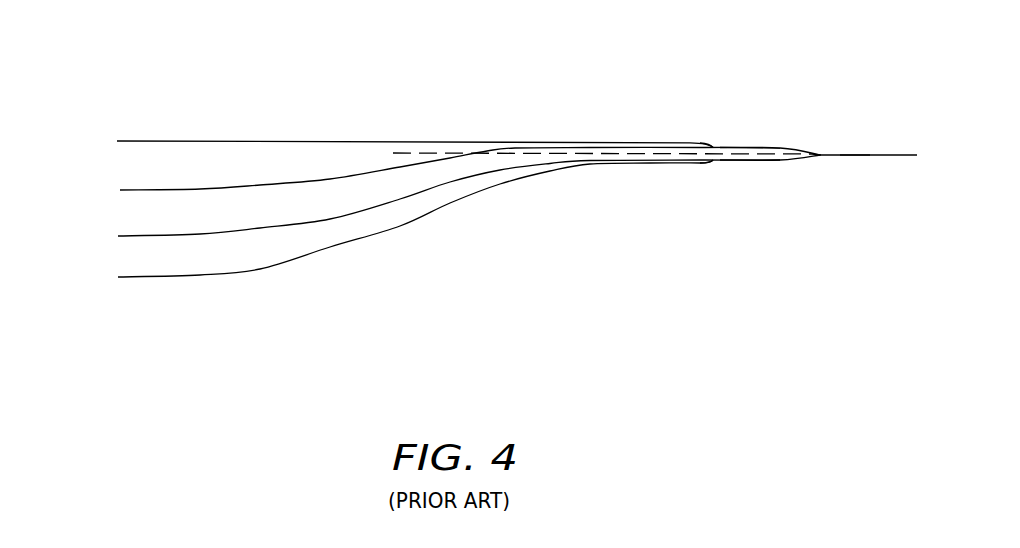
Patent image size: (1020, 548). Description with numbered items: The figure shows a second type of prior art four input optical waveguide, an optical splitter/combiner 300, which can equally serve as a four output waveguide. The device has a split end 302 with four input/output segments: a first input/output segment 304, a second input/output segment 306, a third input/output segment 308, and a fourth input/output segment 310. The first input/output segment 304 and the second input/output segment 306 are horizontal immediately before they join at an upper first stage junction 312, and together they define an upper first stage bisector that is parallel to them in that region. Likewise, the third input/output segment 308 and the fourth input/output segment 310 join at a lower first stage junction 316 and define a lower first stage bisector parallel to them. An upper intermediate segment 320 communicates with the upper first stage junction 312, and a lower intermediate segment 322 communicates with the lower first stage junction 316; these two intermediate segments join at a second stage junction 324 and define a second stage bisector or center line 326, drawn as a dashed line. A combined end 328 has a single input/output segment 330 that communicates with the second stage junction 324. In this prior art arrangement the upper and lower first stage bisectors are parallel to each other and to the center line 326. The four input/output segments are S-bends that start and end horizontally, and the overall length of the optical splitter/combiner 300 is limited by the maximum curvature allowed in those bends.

The optical splitter/combiner 300 is at (638, 80).
The split end 302 is at (423, 205).
The first input/output segment 304 is at (172, 141).
The second input/output segment 306 is at (157, 191).
The third input/output segment 308 is at (157, 237).
The fourth input/output segment 310 is at (180, 278).
The upper first stage junction 312 is at (712, 146).
The lower first stage junction 316 is at (713, 164).
The upper intermediate segment 320 is at (770, 149).
The lower intermediate segment 322 is at (770, 161).
The second stage junction 324 is at (821, 155).
The second stage bisector or center line 326 is at (432, 152).
The combined end 328 is at (916, 157).
The single input/output segment 330 is at (855, 160).